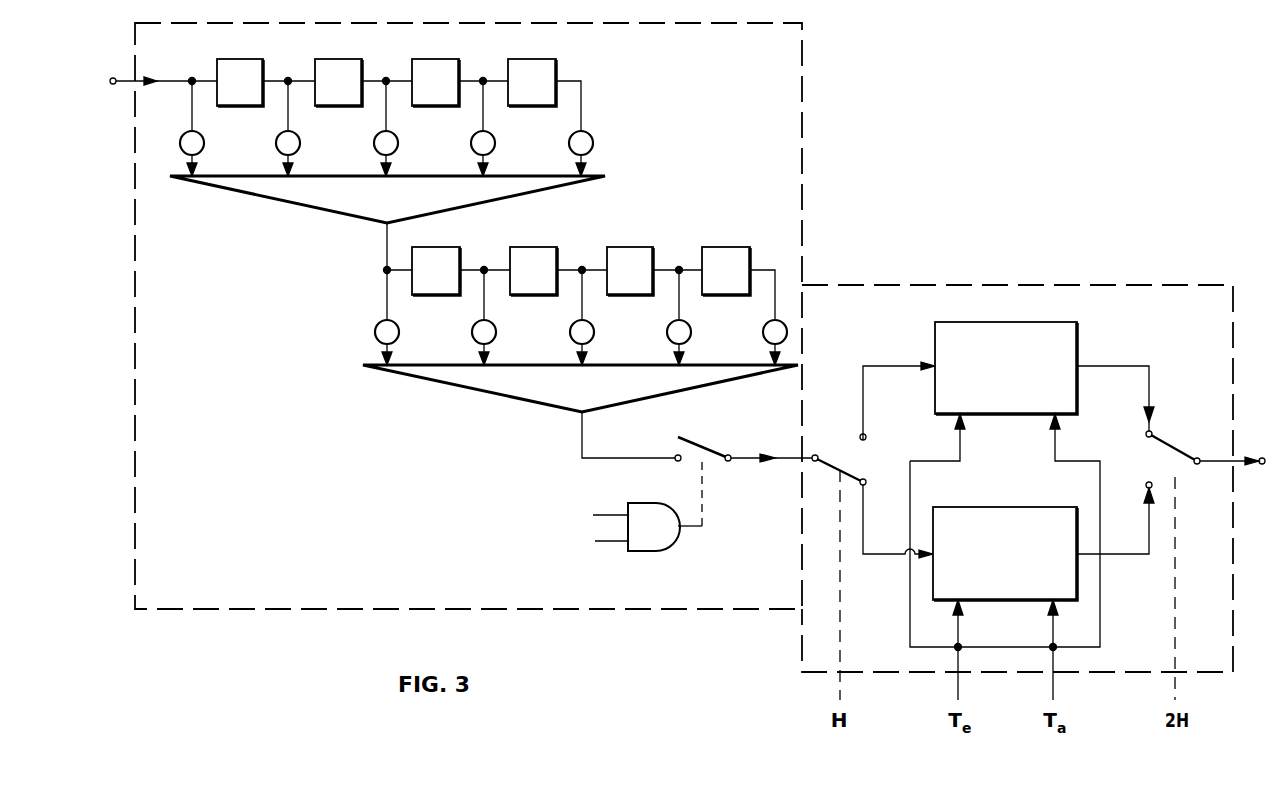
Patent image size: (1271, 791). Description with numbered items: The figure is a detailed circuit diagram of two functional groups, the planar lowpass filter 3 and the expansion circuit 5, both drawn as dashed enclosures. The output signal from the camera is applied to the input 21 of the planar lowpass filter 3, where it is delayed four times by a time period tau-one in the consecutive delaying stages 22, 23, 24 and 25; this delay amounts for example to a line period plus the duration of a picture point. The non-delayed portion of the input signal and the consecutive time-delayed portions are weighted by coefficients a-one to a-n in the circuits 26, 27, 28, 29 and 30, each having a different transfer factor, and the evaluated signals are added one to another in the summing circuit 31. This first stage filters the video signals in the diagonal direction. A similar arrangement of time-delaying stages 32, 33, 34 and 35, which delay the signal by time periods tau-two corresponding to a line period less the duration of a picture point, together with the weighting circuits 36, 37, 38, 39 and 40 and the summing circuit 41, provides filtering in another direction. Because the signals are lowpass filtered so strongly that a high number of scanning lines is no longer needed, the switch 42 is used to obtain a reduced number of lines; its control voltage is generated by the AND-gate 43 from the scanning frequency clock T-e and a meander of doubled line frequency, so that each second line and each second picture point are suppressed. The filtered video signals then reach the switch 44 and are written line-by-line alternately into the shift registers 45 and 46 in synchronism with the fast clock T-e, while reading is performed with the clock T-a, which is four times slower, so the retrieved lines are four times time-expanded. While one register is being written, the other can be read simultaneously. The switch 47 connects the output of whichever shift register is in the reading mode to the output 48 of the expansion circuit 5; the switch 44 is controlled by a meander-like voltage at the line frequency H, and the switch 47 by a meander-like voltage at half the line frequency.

The planar lowpass filter 3 is at (802, 73).
The expansion circuit 5 is at (1180, 285).
The input 21 is at (147, 66).
The delaying stage 22 is at (240, 69).
The delaying stage 23 is at (338, 69).
The delaying stage 24 is at (435, 69).
The delaying stage 25 is at (532, 69).
The weighting circuit 26 is at (206, 128).
The weighting circuit 27 is at (302, 128).
The weighting circuit 28 is at (400, 128).
The weighting circuit 29 is at (497, 128).
The weighting circuit 30 is at (595, 144).
The summing circuit 31 is at (517, 192).
The delaying stage 32 is at (436, 257).
The delaying stage 33 is at (533, 257).
The delaying stage 34 is at (630, 257).
The delaying stage 35 is at (726, 257).
The weighting circuit 36 is at (399, 317).
The weighting circuit 37 is at (496, 317).
The weighting circuit 38 is at (594, 317).
The weighting circuit 39 is at (691, 317).
The weighting circuit 40 is at (763, 333).
The summing circuit 41 is at (523, 398).
The switch 42 is at (743, 473).
The AND-gate 43 is at (626, 535).
The switch 44 is at (873, 460).
The shift register 45 is at (1072, 330).
The shift register 46 is at (1038, 507).
The switch 47 is at (1138, 415).
The output 48 is at (1234, 449).